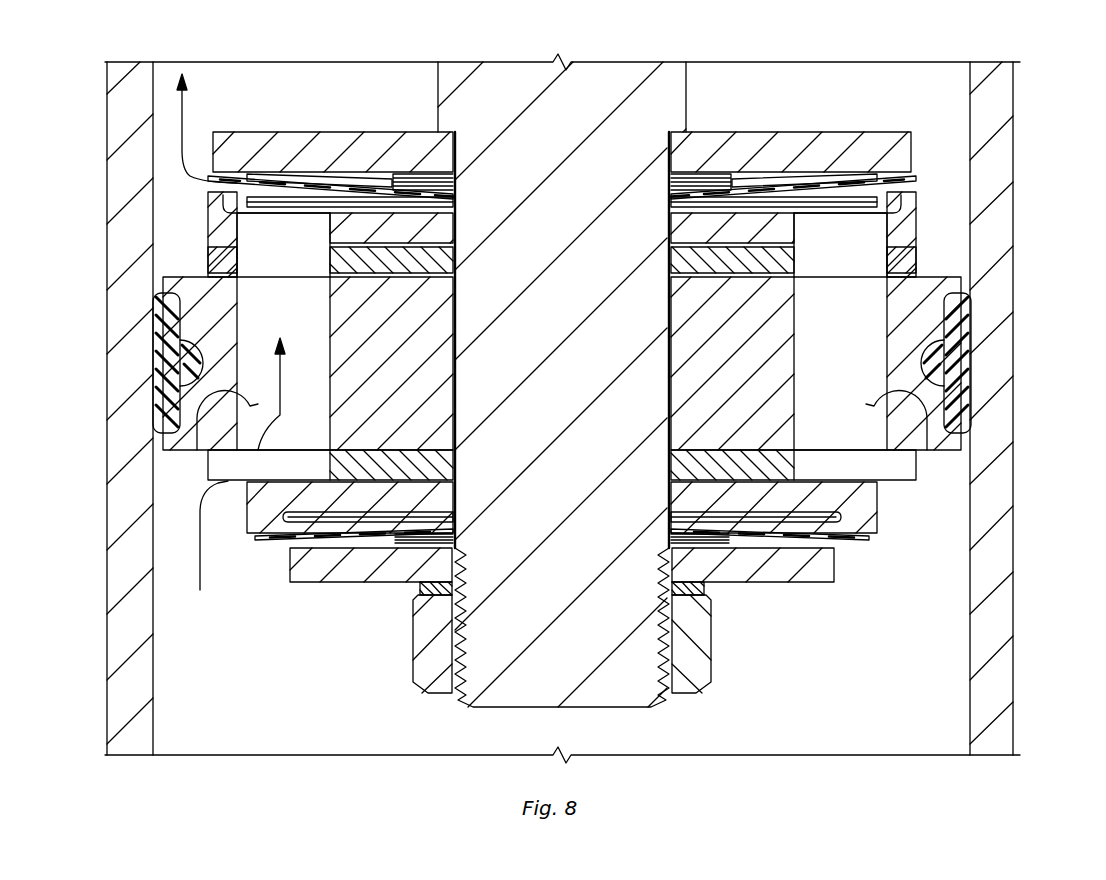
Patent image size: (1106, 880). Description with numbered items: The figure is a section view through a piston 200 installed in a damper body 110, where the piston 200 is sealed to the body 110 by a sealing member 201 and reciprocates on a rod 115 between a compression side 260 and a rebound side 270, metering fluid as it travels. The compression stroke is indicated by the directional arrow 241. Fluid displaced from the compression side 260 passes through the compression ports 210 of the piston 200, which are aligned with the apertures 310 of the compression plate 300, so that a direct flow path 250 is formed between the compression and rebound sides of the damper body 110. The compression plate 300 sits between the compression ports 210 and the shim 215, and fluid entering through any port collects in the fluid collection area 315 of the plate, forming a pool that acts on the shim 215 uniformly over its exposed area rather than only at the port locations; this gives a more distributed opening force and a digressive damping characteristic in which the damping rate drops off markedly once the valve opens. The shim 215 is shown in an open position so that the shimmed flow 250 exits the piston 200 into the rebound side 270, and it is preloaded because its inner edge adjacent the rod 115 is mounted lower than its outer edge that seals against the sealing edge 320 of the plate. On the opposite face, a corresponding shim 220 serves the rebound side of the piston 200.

The damper body 110 is at (1016, 100).
The rod 115 is at (687, 90).
The piston 200 is at (200, 300).
The sealing member 201 is at (940, 368).
The compression ports 210 is at (248, 362).
The shim 215 is at (918, 178).
The shim 220 is at (853, 542).
The directional arrow 241 is at (567, 518).
The compression shim flow 250 is at (183, 110).
The compression side 260 is at (853, 654).
The rebound side 270 is at (852, 104).
The compression plate 300 is at (200, 227).
The apertures 310 is at (867, 227).
The fluid collection area 315 is at (300, 210).
The sealing edge 320 is at (918, 183).